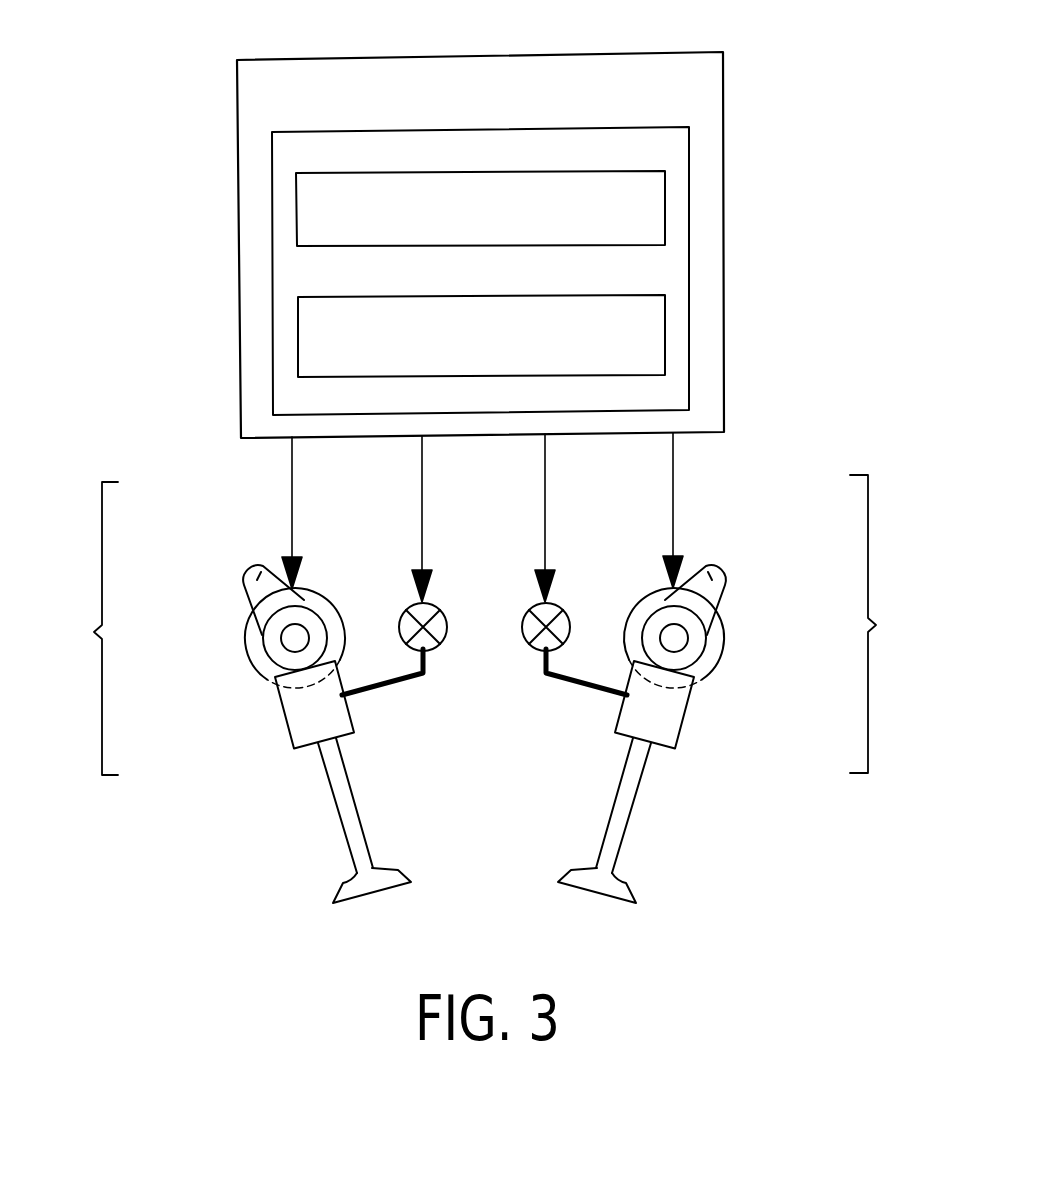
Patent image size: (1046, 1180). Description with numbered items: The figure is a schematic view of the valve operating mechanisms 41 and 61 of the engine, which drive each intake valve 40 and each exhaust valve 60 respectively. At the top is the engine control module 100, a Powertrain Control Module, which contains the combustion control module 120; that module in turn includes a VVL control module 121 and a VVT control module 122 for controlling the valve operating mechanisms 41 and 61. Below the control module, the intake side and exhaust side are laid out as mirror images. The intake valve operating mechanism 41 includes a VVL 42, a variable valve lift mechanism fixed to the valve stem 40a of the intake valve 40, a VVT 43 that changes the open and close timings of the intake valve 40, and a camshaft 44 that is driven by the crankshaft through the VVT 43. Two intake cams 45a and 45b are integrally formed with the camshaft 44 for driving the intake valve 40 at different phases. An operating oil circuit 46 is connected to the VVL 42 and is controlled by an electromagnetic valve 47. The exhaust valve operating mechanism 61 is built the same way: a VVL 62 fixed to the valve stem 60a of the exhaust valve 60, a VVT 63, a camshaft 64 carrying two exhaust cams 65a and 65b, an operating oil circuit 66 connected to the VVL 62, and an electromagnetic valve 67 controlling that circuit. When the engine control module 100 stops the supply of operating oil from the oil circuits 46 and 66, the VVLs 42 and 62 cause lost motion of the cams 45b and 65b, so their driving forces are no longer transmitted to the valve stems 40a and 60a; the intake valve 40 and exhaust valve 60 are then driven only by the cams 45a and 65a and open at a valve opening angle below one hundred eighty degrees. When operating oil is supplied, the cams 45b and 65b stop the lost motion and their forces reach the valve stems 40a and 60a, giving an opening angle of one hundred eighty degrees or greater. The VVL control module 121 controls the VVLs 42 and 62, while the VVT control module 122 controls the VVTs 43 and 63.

The engine control module 100 is at (618, 52).
The combustion control module 120 is at (590, 128).
The VVL control module 121 is at (590, 173).
The VVT control module 122 is at (597, 297).
The valve operating mechanism 41 is at (261, 719).
The VVT 43 is at (343, 620).
The camshaft 44 is at (287, 645).
The intake cam 45a is at (258, 568).
The intake cam 45b is at (242, 595).
The VVL 42 is at (280, 708).
The operating oil circuit 46 is at (390, 688).
The electromagnetic valve 47 is at (440, 612).
The intake valve 40 is at (328, 847).
The valve stem 40a is at (343, 845).
The valve operating mechanism 61 is at (704, 716).
The VVT 63 is at (626, 620).
The camshaft 64 is at (682, 645).
The exhaust cam 65a is at (711, 568).
The exhaust cam 65b is at (727, 595).
The VVL 62 is at (689, 708).
The operating oil circuit 66 is at (579, 688).
The electromagnetic valve 67 is at (529, 612).
The exhaust valve 60 is at (644, 847).
The valve stem 60a is at (626, 845).